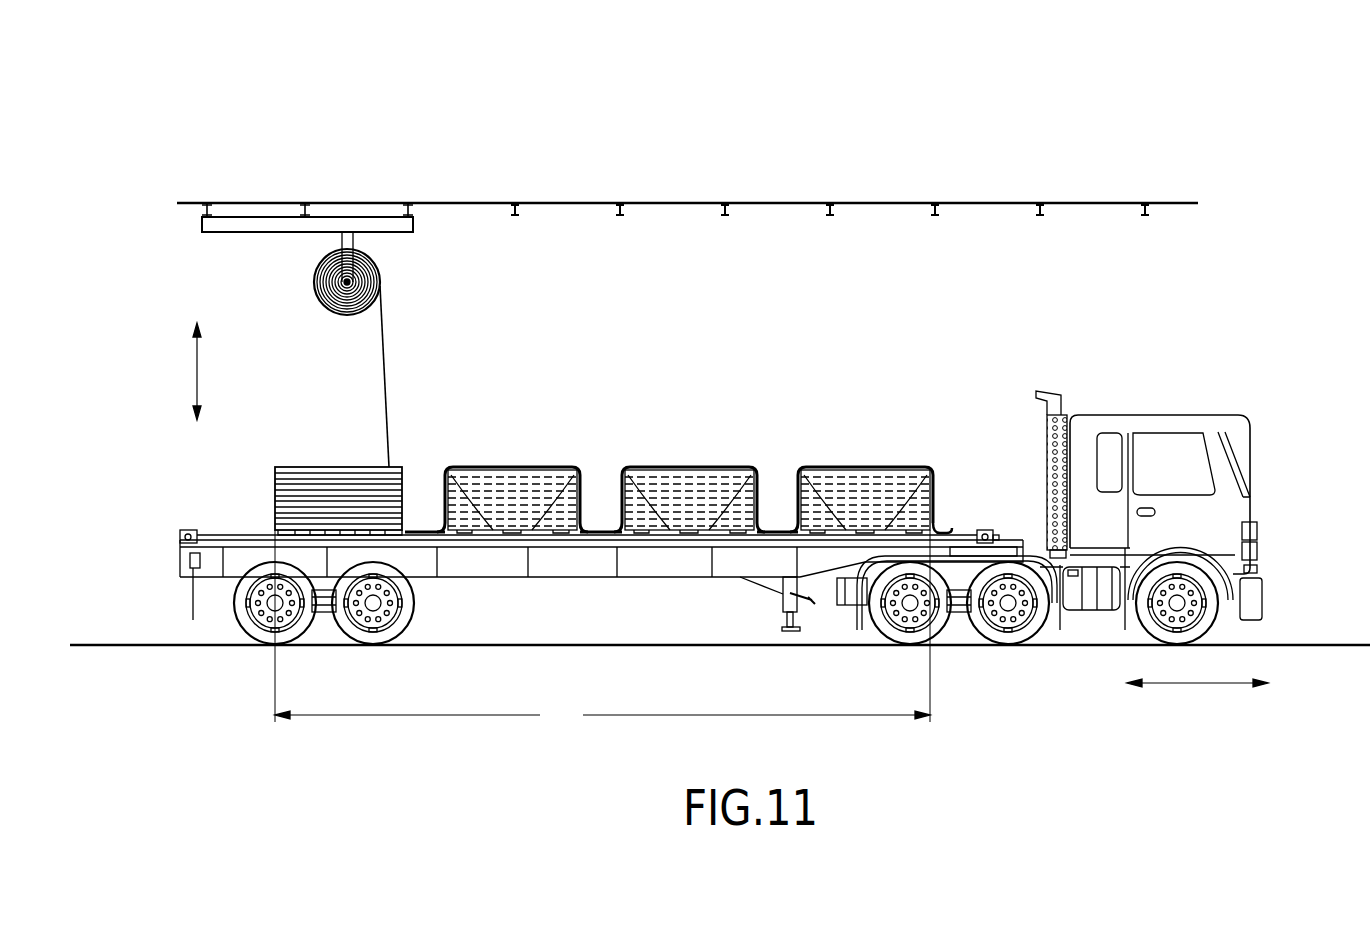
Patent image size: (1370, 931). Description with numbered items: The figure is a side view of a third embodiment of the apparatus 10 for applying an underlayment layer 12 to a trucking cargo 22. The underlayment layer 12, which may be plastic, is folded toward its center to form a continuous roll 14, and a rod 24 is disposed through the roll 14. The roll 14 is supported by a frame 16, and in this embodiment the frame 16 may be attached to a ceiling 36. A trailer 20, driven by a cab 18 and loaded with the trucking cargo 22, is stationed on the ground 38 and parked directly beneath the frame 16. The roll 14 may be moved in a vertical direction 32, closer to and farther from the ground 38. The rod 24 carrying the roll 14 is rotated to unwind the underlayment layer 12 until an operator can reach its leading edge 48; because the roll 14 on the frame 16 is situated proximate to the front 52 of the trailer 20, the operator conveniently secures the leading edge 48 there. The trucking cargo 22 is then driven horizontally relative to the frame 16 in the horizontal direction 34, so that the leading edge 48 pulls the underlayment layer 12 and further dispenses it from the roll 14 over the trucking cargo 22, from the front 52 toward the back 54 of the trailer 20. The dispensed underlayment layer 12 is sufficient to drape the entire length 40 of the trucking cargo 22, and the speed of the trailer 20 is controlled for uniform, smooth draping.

The apparatus 10 is at (273, 170).
The underlayment layer 12 is at (388, 337).
The roll 14 is at (313, 275).
The frame 16 is at (202, 242).
The cab 18 is at (1152, 417).
The trailer 20 is at (552, 585).
The trucking cargo 22 is at (300, 467).
The rod 24 is at (343, 297).
The vertical direction 32 is at (197, 372).
The horizontal direction 34 is at (1195, 684).
The ceiling 36 is at (1090, 204).
The ground 38 is at (1313, 645).
The length 40 is at (602, 632).
The leading edge 48 is at (950, 534).
The front 52 is at (983, 530).
The back 54 is at (180, 536).